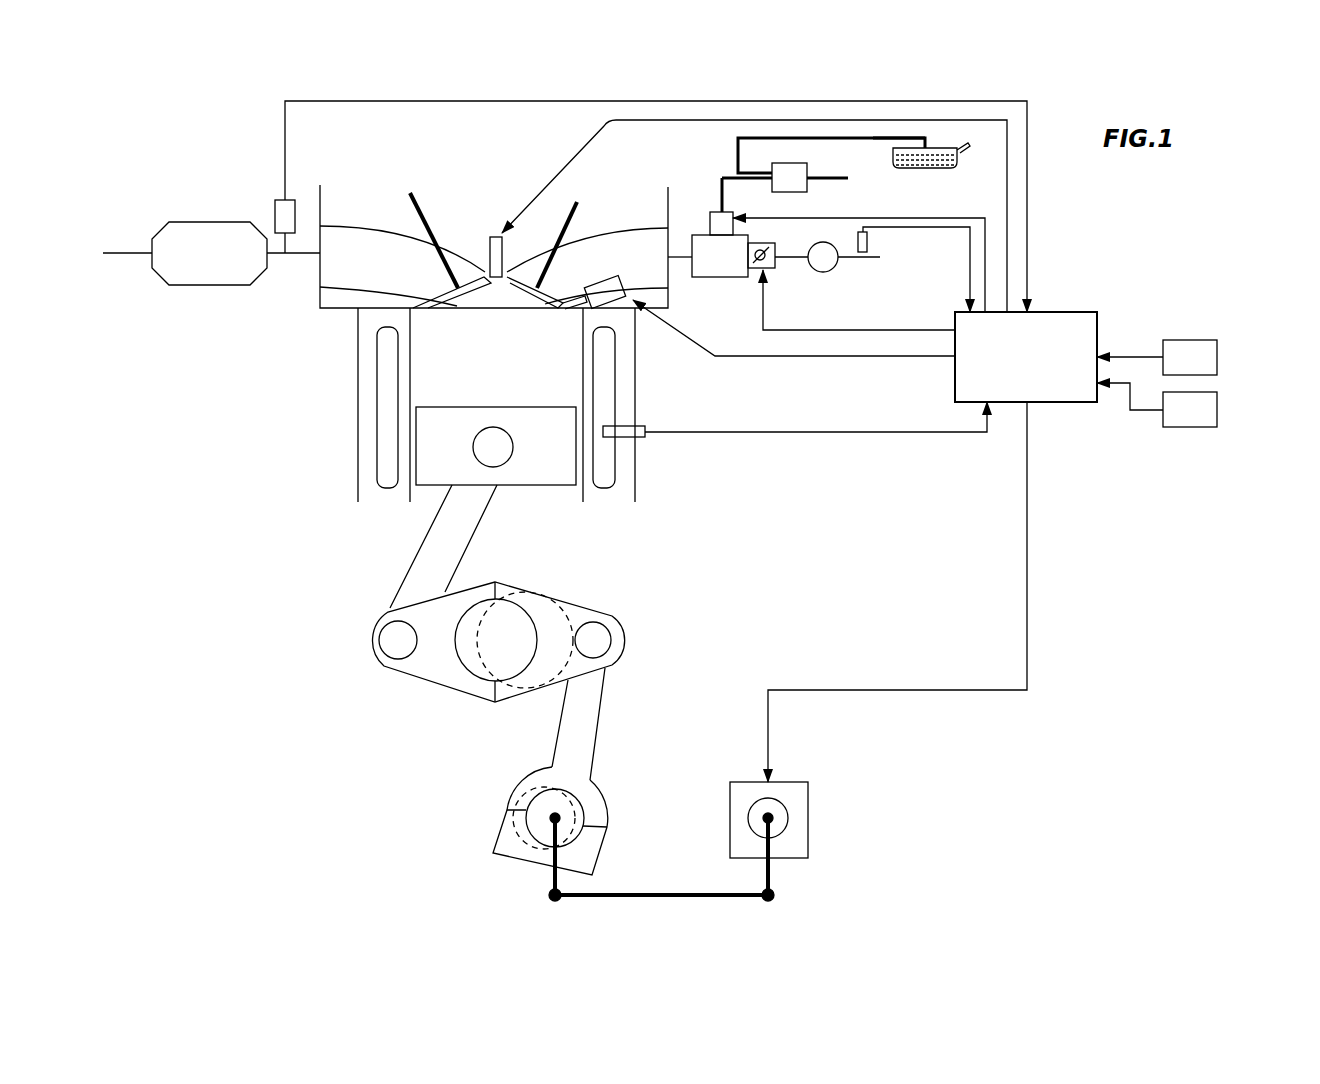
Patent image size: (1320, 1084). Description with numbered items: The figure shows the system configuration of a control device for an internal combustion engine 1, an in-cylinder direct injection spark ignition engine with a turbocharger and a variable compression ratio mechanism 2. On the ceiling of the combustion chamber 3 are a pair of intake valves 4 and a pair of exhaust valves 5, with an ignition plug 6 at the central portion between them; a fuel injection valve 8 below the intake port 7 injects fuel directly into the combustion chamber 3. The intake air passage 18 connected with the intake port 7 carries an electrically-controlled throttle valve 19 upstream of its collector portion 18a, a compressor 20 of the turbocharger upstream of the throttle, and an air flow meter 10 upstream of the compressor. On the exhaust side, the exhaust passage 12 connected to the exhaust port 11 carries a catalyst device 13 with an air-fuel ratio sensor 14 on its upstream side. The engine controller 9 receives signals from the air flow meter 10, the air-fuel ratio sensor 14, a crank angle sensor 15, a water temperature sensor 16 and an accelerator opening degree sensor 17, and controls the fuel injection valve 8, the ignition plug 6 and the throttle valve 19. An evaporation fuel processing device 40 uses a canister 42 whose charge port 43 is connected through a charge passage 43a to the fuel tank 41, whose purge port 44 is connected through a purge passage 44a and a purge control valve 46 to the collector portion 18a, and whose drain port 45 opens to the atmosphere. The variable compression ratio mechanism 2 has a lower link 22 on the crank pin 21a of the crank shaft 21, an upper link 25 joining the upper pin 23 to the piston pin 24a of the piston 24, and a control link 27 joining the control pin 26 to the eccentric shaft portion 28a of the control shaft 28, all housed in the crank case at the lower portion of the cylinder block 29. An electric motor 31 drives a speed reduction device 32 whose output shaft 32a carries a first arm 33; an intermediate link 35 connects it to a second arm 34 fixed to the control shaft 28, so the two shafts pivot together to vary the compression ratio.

The internal combustion engine 1 is at (340, 390).
The variable compression ratio mechanism 2 is at (457, 748).
The combustion chamber 3 is at (452, 303).
The intake valve 4 is at (543, 293).
The exhaust valve 5 is at (473, 288).
The ignition plug 6 is at (495, 250).
The intake port 7 is at (642, 237).
The fuel injection valve 8 is at (607, 288).
The engine controller 9 is at (1060, 320).
The air flow meter 10 is at (867, 247).
The exhaust port 11 is at (372, 240).
The exhaust passage 12 is at (127, 250).
The catalyst device 13 is at (190, 232).
The air-fuel ratio sensor 14 is at (283, 216).
The crank angle sensor 15 is at (1205, 353).
The water temperature sensor 16 is at (635, 428).
The accelerator opening degree sensor 17 is at (1205, 403).
The intake air passage 18 is at (678, 258).
The collector portion 18a is at (723, 272).
The electrically-controlled throttle valve 19 is at (777, 263).
The compressor 20 is at (823, 270).
The crank shaft 21 is at (570, 617).
The crank pin 21a is at (472, 658).
The lower link 22 is at (467, 595).
The upper pin 23 is at (388, 638).
The piston 24 is at (548, 463).
The piston pin 24a is at (497, 450).
The upper link 25 is at (428, 560).
The control pin 26 is at (602, 642).
The control link 27 is at (585, 718).
The control shaft 28 is at (510, 797).
The eccentric shaft portion 28a is at (583, 812).
The cylinder block 29 is at (358, 447).
The electric motor 31 is at (800, 800).
The speed reduction device 32 is at (785, 818).
The speed reduction device output shaft 32a is at (760, 818).
The first arm 33 is at (768, 880).
The second arm 34 is at (553, 875).
The intermediate link 35 is at (675, 893).
The evaporation fuel processing device 40 is at (728, 148).
The fuel tank 41 is at (947, 167).
The canister 42 is at (800, 172).
The charge port 43 is at (762, 163).
The charge passage 43a is at (873, 142).
The purge port 44 is at (753, 180).
The purge passage 44a is at (722, 175).
The drain port 45 is at (830, 180).
The purge control valve 46 is at (713, 222).